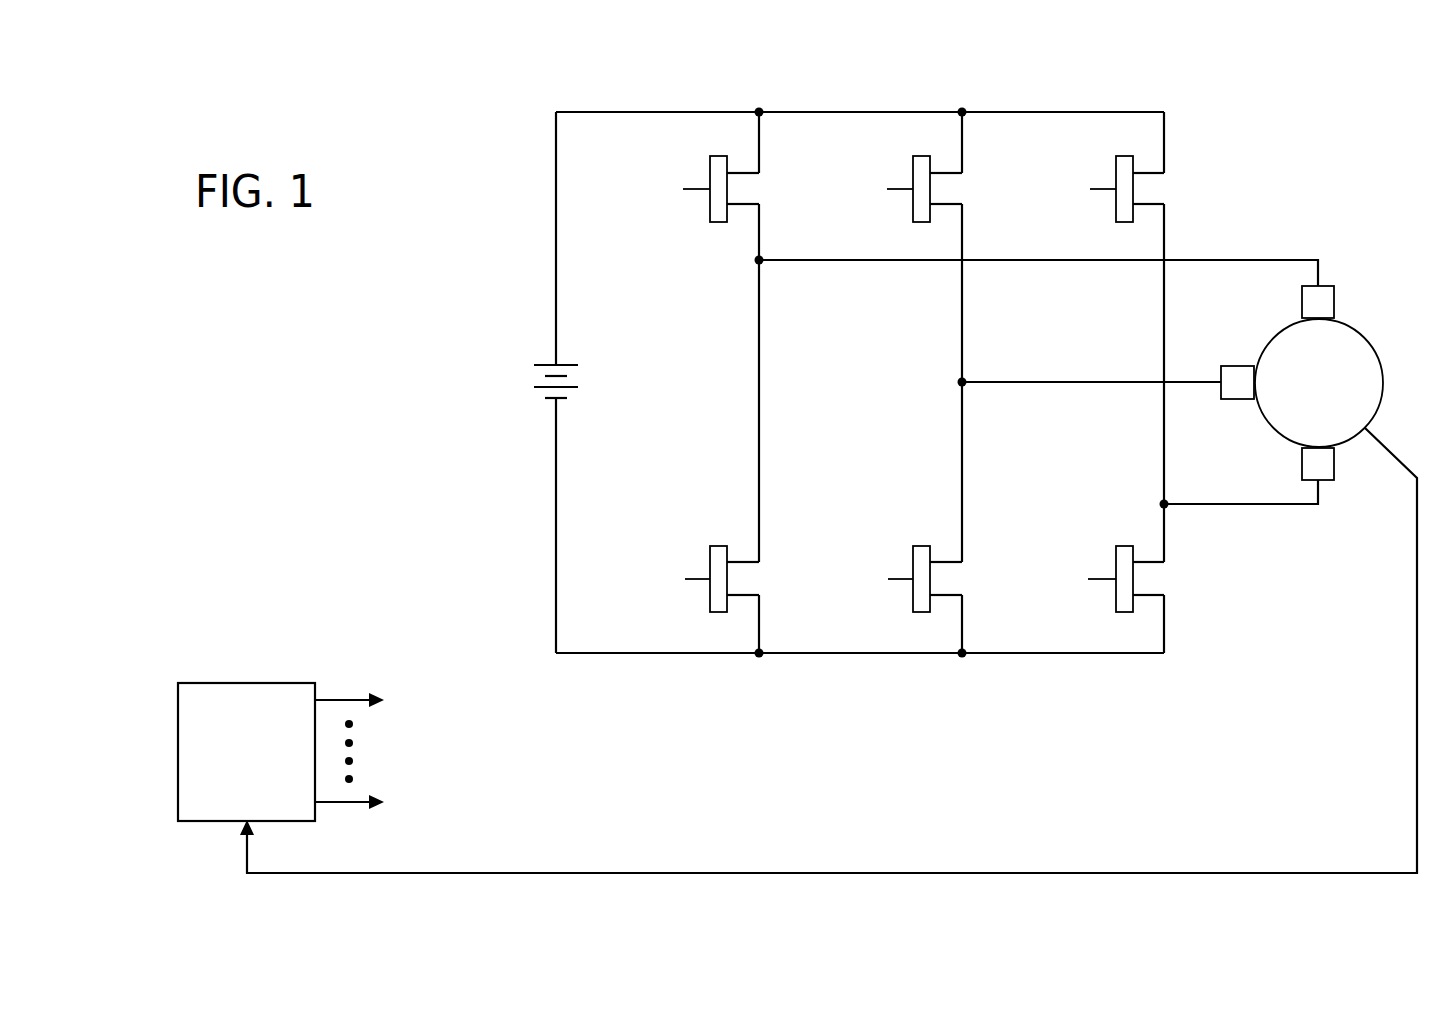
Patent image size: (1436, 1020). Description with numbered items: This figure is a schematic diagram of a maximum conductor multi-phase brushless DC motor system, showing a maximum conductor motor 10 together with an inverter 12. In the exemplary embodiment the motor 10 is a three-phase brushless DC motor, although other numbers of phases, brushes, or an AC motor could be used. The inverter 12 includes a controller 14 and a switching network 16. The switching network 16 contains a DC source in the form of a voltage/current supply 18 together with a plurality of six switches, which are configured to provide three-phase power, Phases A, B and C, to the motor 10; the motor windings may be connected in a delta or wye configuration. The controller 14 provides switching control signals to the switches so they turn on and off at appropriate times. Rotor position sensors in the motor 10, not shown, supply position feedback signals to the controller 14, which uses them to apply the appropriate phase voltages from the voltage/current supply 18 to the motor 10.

The maximum conductor motor 10 is at (1406, 331).
The inverter 12 is at (428, 526).
The controller 14 is at (178, 727).
The switching network 16 is at (645, 101).
The voltage/current supply 18 is at (534, 386).